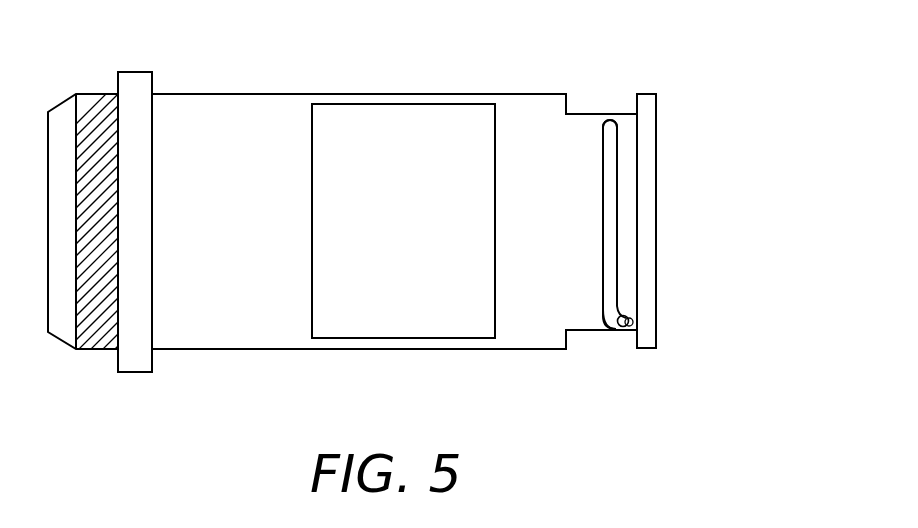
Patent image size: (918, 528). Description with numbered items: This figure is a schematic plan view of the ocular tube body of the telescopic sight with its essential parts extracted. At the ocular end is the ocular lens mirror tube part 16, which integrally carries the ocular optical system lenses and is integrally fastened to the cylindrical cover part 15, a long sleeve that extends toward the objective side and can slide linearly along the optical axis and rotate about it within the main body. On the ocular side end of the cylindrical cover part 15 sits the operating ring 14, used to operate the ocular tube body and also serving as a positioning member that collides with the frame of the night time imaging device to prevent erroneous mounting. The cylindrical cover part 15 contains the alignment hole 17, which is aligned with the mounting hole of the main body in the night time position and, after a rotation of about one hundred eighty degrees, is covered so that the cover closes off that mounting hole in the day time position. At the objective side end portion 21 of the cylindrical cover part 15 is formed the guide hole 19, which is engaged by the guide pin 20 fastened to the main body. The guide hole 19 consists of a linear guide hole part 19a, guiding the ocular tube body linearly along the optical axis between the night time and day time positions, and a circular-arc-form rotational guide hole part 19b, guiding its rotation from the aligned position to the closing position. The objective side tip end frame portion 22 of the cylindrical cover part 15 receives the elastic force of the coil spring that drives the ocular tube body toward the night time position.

The operating ring 14 is at (132, 363).
The cylindrical cover part 15 is at (397, 93).
The ocular lens mirror tube part 16 is at (93, 340).
The alignment hole 17 is at (402, 321).
The guide hole 19 is at (617, 208).
The linear guide hole part 19a is at (605, 325).
The circular-arc-form rotational guide hole part 19b is at (611, 148).
The guide pin 20 is at (630, 313).
The objective side end portion 21 is at (590, 113).
The objective side tip end frame portion 22 is at (655, 338).